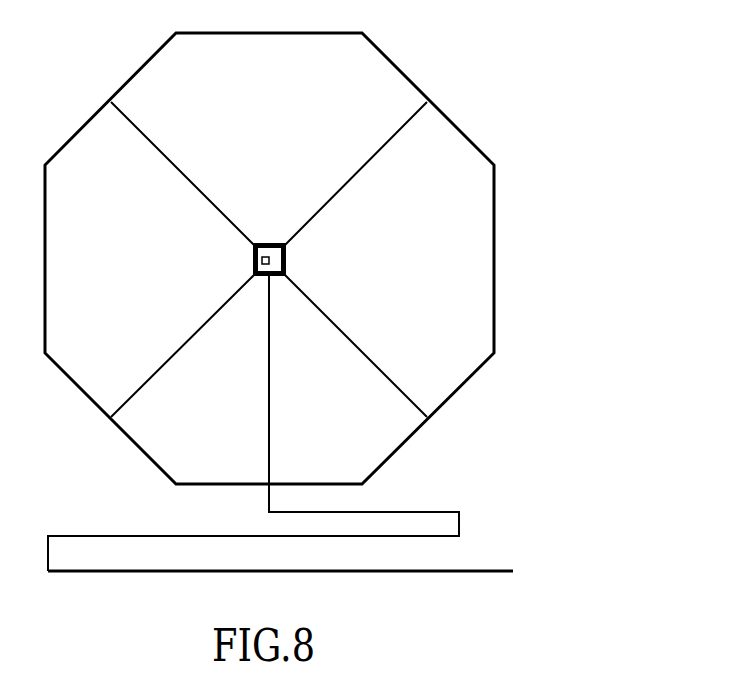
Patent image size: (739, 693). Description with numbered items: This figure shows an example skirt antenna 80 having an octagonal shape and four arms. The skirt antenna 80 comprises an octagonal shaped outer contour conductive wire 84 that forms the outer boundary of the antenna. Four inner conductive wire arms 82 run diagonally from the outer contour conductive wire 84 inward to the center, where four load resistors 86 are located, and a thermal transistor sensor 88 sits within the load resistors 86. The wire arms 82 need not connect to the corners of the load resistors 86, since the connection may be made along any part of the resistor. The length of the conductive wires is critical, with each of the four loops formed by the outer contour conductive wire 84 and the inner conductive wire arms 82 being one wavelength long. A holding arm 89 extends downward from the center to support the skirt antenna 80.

The skirt antenna 80 is at (360, 294).
The inner conductive wire arms 82 is at (373, 160).
The octagonal shaped outer contour conductive wire 84 is at (386, 52).
The load resistors 86 is at (271, 243).
The thermal transistor sensor 88 is at (256, 251).
The holding arm 89 is at (270, 343).